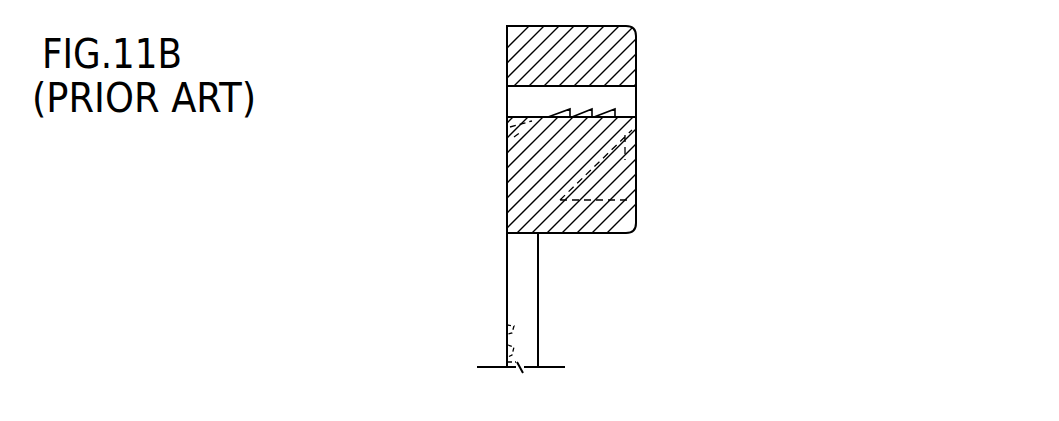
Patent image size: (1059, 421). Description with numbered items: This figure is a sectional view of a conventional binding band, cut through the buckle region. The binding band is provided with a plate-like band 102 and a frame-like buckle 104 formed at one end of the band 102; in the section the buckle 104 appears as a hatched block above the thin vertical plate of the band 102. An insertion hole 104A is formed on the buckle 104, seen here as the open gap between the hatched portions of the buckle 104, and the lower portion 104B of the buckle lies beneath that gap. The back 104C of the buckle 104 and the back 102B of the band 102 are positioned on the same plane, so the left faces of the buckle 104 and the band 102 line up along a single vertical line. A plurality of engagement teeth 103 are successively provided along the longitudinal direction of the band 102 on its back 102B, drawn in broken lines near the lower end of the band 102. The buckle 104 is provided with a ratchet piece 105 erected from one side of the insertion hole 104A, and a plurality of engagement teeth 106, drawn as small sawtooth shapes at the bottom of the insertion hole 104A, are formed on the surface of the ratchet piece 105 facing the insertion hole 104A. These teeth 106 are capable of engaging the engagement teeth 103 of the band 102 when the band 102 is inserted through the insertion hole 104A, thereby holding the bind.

The band 102 is at (540, 282).
The back of the band 102B is at (507, 278).
The engagement teeth 103 is at (507, 345).
The buckle 104 is at (591, 143).
The insertion hole 104A is at (597, 87).
The lower housing portion 104B is at (636, 217).
The back of the buckle 104C is at (507, 182).
The ratchet piece 105 is at (507, 128).
The engagement teeth 106 is at (548, 115).